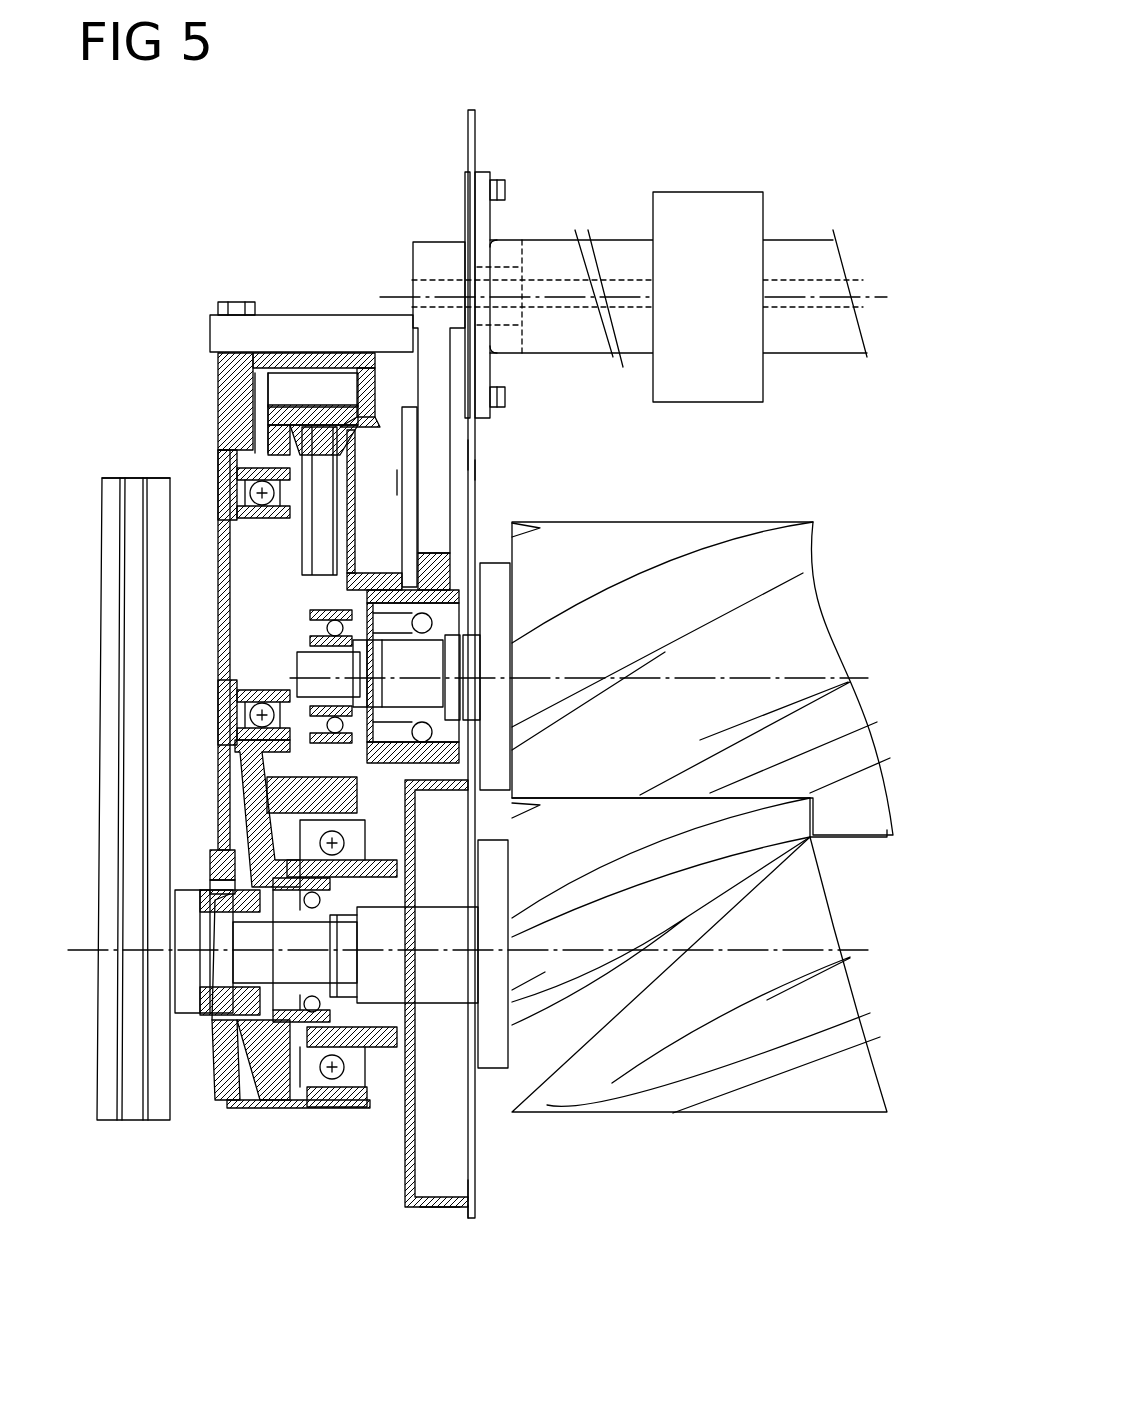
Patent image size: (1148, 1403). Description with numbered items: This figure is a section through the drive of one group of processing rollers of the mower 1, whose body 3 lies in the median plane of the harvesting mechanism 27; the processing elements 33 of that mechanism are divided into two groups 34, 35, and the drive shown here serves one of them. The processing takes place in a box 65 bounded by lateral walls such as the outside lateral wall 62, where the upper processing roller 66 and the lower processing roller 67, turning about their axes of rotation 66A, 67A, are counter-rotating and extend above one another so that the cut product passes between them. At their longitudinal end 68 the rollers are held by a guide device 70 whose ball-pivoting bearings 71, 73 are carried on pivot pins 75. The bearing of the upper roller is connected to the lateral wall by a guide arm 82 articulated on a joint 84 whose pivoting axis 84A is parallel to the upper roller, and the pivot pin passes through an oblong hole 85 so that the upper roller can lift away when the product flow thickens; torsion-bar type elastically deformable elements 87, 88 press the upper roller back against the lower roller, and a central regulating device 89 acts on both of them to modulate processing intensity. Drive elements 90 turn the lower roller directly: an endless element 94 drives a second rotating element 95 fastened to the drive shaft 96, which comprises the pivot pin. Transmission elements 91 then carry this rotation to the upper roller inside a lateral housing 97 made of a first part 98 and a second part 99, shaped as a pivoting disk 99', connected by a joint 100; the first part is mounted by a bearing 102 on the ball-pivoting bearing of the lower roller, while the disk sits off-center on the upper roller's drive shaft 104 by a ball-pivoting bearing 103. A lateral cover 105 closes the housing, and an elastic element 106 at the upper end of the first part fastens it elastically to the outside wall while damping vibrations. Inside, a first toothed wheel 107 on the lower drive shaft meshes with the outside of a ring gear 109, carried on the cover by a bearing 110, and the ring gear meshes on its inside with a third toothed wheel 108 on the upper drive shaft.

The mower 1 is at (118, 230).
The body 3 is at (212, 190).
The harvesting mechanism 27 is at (475, 1215).
The processing elements 33 is at (473, 1187).
The group of processing elements 34 is at (450, 1207).
The group of processing elements 35 is at (450, 1207).
The lateral wall 62 is at (478, 147).
The box 65 is at (477, 110).
The upper processing roller 66 is at (737, 523).
The axis of rotation 66A is at (862, 680).
The lower processing roller 67 is at (727, 1113).
The axis of rotation 67A is at (868, 952).
The longitudinal end 68 is at (553, 537).
The guide device 70 is at (433, 240).
The ball-pivoting bearing 71 is at (395, 567).
The ball-pivoting bearing 73 is at (303, 1110).
The pivot pin 75 is at (482, 648).
The guide arm 82 is at (442, 375).
The joint 84 is at (508, 267).
The pivoting axis 84A is at (873, 290).
The oblong hole 85 is at (474, 473).
The elastically deformable element 87 is at (627, 283).
The elastically deformable element 88 is at (808, 290).
The central regulating device 89 is at (720, 207).
The drive elements 90 is at (100, 472).
The transmission elements 91 is at (275, 385).
The endless element 94 is at (138, 477).
The second rotating element 95 is at (187, 1007).
The drive shaft 96 is at (498, 1008).
The lateral housing 97 is at (358, 1120).
The first part 98 is at (263, 1113).
The second part 99 is at (468, 492).
The pivoting disk 99' is at (313, 414).
The joint 100 is at (474, 452).
The bearing 102 is at (357, 1117).
The ball-pivoting bearing 103 is at (303, 600).
The drive shaft 104 is at (498, 692).
The lateral cover 105 is at (213, 360).
The elastic element 106 is at (338, 328).
The first toothed wheel 107 is at (273, 1108).
The third toothed wheel 108 is at (283, 648).
The ring gear 109 is at (288, 380).
The bearing 110 is at (217, 455).